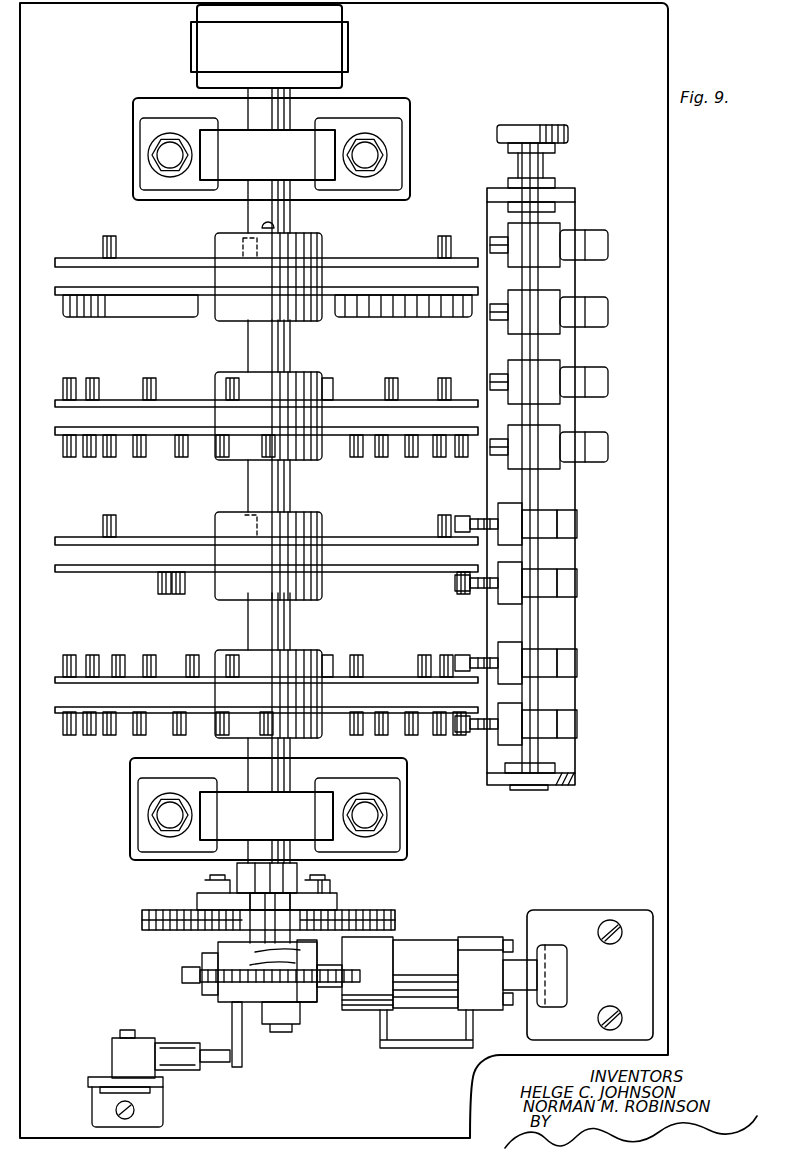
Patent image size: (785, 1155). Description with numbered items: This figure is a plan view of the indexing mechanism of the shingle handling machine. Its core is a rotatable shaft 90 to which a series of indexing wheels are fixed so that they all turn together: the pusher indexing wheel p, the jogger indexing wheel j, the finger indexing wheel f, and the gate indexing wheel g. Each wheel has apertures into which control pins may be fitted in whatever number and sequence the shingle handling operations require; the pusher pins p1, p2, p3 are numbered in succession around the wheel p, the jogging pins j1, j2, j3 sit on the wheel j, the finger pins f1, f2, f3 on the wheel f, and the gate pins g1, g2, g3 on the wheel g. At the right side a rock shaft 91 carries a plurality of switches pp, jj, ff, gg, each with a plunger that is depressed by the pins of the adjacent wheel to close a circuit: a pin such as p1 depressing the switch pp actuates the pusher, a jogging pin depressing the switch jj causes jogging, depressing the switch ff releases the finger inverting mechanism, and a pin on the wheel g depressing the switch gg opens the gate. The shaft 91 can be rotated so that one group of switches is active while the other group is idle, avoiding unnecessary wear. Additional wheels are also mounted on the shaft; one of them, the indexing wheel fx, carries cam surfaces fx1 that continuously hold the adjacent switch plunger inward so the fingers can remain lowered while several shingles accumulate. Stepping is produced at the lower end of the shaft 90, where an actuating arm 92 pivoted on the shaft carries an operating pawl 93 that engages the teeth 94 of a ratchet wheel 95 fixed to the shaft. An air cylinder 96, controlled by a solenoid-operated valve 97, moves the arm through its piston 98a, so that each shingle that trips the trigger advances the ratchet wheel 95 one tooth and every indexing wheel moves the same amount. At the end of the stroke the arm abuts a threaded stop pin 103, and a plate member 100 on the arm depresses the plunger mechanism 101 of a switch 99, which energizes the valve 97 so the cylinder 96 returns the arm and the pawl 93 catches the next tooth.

The indexing wheel fx is at (157, 291).
The cam surfaces fx1 is at (122, 312).
The gate indexing wheel g is at (147, 537).
The pin on gate indexing wheel g1 is at (438, 523).
The pin on gate indexing wheel g2 is at (103, 524).
The pin on gate indexing wheel g3 is at (245, 525).
The finger indexing wheel f is at (100, 572).
The pin on finger indexing wheel f1 is at (158, 584).
The pin on finger indexing wheel f2 is at (180, 592).
The pin on finger indexing wheel f3 is at (461, 595).
The jogger indexing wheel j is at (130, 679).
The pin on jogger indexing wheel j1 is at (446, 655).
The pin on jogger indexing wheel j2 is at (428, 654).
The pin on jogger indexing wheel j3 is at (398, 654).
The pusher indexing wheel p is at (128, 716).
The pin on pusher indexing wheel p1 is at (444, 738).
The pin on pusher indexing wheel p2 is at (413, 739).
The pin on pusher indexing wheel p3 is at (382, 739).
The rotatable shaft 90 is at (292, 621).
The rock shaft 91 is at (535, 457).
The actuating arm 92 is at (245, 988).
The operating pawl 93 is at (320, 918).
The teeth 94 is at (392, 921).
The ratchet wheel 95 is at (370, 906).
The air cylinder 96 is at (438, 972).
The valve 97 is at (433, 1036).
The piston 98a is at (325, 988).
The switch 99 is at (125, 1053).
The plate member 100 is at (245, 1045).
The plunger mechanism 101 is at (170, 1050).
The threaded stop pin 103 is at (181, 976).
The gate switch gg is at (516, 524).
The finger switch ff is at (516, 583).
The jogging switch jj is at (516, 663).
The pusher switch pp is at (516, 724).